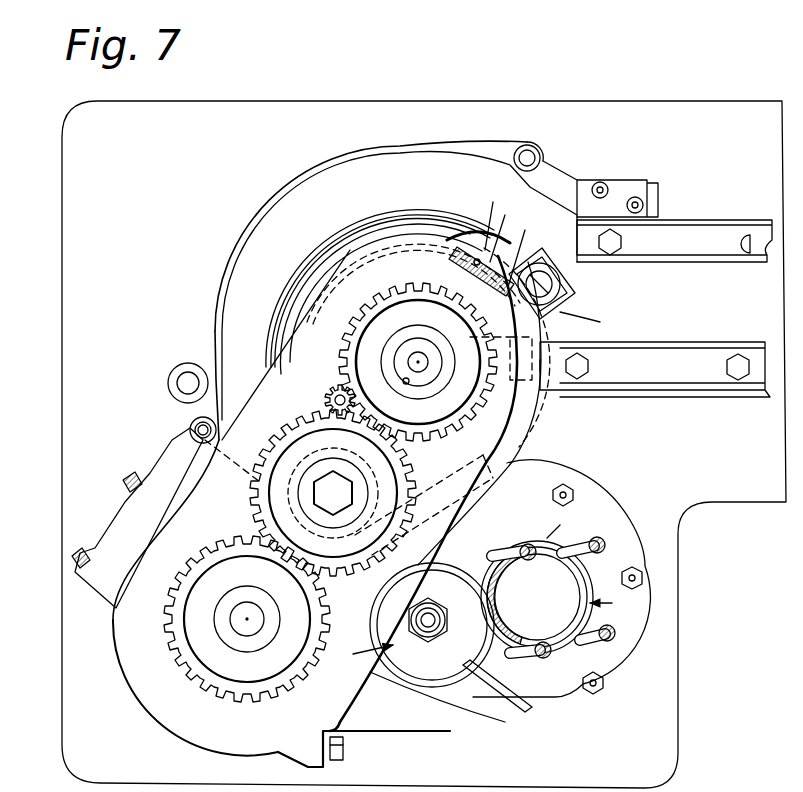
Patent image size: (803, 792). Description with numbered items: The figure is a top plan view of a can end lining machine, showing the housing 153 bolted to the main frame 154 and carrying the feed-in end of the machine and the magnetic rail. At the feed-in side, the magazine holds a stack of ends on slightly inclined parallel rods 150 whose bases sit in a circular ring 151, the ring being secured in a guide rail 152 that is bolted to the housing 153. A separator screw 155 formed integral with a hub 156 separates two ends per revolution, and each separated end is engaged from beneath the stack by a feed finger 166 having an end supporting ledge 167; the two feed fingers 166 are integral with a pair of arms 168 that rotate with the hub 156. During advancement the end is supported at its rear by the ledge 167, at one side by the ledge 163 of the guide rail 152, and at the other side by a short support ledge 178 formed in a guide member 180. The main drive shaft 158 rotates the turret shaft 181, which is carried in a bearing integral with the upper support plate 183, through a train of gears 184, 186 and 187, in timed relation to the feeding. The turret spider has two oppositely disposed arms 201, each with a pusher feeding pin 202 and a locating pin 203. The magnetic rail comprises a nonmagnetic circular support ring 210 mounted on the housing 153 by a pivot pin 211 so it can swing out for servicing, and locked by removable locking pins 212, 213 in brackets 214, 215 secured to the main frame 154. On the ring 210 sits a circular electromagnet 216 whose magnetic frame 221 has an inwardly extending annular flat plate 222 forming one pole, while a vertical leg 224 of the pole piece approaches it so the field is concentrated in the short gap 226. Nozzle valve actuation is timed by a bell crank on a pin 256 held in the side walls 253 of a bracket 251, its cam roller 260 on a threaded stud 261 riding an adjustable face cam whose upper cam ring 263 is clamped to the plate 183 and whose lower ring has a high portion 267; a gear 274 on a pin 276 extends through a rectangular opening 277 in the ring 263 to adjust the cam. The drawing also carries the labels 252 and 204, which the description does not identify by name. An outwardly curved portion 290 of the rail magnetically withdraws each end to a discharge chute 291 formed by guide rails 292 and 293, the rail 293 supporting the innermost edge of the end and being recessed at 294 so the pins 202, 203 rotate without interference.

The housing 153 is at (68, 430).
The circular support ring 210 is at (257, 226).
The pivot pin 211 is at (184, 382).
The locking pin 212 is at (196, 428).
The locking pin 213 is at (536, 154).
The bracket 214 is at (172, 455).
The bracket 215 is at (555, 170).
The circular electromagnet 216 is at (300, 210).
The magnetic frame 221 is at (343, 182).
The annular flat plate 222 is at (375, 173).
The vertical leg 224 is at (283, 331).
The gap 226 is at (310, 297).
The high portion 267 is at (362, 250).
The rectangular opening 277 is at (457, 235).
The pin 276 is at (478, 252).
The gear 274 is at (474, 264).
The outwardly curved portion 290 is at (556, 262).
The cam roller 260 is at (594, 239).
The discharge chute 291 is at (693, 278).
The guide rail 292 is at (728, 247).
The threaded stud 261 is at (552, 280).
The bracket 251 is at (562, 283).
The plate 252 is at (570, 295).
The side walls 253 is at (578, 305).
The pin 256 is at (600, 322).
The locating pin 203 is at (336, 392).
The pusher feeding pin 202 is at (428, 250).
The arm 201 is at (425, 272).
The rotating shaft 181 is at (417, 352).
The gear 187 is at (356, 333).
The upper cam ring 263 is at (516, 430).
The guide rail 293 is at (708, 373).
The recess 294 is at (552, 378).
The plate 204 is at (514, 463).
The guide rail 152 is at (597, 518).
The rods 150 is at (529, 543).
The circular ring 151 is at (585, 575).
The main frame 154 is at (663, 565).
The ledge 163 is at (515, 505).
The support ledge 178 is at (425, 548).
The guide member 180 is at (396, 518).
The gear 186 is at (353, 557).
The upper support plate 183 is at (135, 655).
The main drive shaft 158 is at (254, 628).
The gear 184 is at (218, 697).
The separator screw 155 is at (387, 670).
The hub 156 is at (421, 660).
The feed finger 166 is at (503, 697).
The end supporting ledge 167 is at (512, 703).
The arms 168 is at (445, 692).